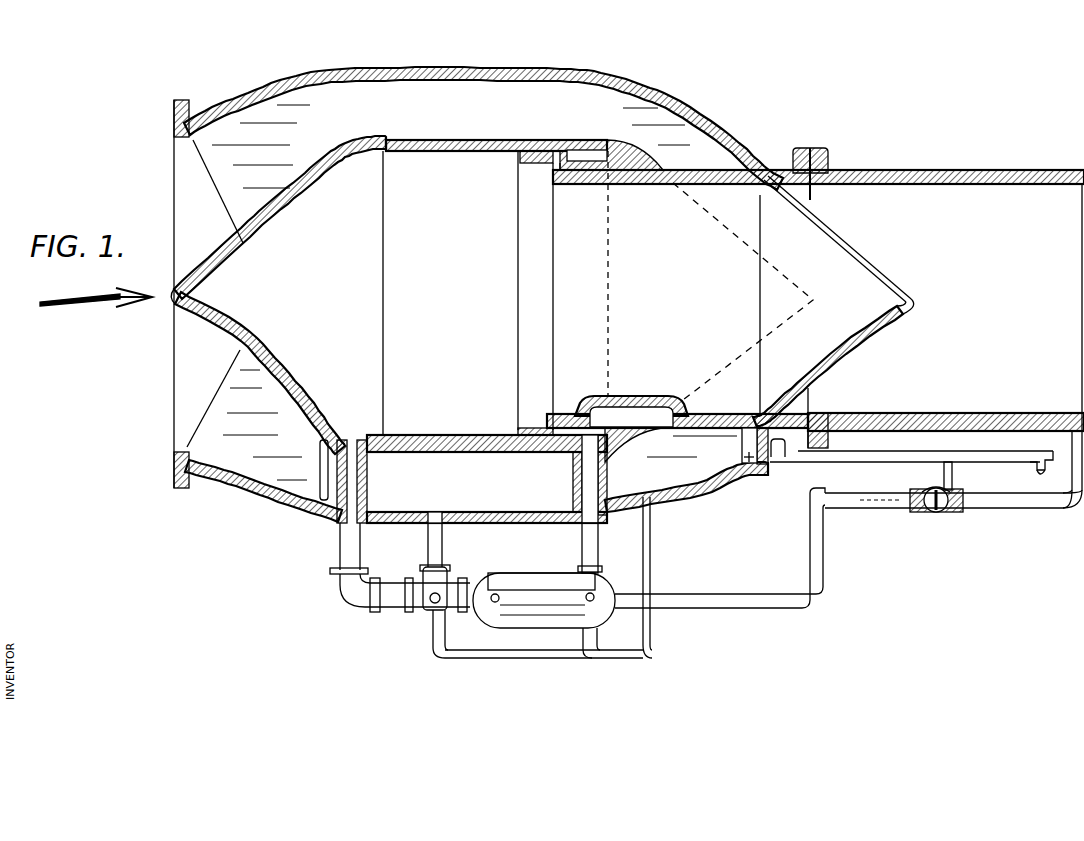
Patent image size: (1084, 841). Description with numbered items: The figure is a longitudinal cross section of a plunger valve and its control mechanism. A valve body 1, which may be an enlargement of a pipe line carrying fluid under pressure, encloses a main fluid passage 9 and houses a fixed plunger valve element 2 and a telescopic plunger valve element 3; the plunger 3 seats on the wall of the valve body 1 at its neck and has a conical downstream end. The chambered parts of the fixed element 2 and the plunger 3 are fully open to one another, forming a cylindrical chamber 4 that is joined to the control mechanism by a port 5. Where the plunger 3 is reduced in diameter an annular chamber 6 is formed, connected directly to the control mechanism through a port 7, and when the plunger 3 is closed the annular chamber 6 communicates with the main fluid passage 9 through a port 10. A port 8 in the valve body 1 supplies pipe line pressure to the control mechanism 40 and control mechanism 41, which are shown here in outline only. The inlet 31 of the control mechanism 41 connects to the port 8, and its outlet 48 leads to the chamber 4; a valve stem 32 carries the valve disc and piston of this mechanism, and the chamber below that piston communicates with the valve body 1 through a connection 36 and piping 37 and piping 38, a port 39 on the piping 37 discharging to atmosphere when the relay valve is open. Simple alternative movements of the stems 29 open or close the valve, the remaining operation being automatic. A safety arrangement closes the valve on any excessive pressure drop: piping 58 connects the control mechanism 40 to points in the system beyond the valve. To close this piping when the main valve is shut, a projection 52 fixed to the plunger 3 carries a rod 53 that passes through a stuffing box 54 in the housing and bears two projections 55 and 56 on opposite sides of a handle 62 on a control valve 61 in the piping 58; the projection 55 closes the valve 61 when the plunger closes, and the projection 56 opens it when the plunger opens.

The valve body 1 is at (503, 68).
The fixed plunger valve element 2 is at (275, 215).
The telescopic plunger valve element 3 is at (826, 232).
The cylindrical chamber 4 is at (420, 203).
The port 5 is at (352, 478).
The annular chamber 6 is at (588, 157).
The port 7 is at (603, 478).
The port 8 is at (440, 512).
The main fluid passage 9 is at (553, 103).
The port 10 is at (626, 395).
The stems 29 is at (492, 595).
The inlet 31 is at (442, 560).
The valve stem 32 is at (432, 603).
The connection 36 is at (428, 640).
The piping 37 is at (515, 660).
The piping 38 is at (648, 568).
The port 39 is at (598, 626).
The control mechanism 40 is at (532, 578).
The control mechanism 41 is at (428, 585).
The outlet 48 is at (355, 597).
The projection 52 is at (745, 465).
The rod 53 is at (877, 450).
The stuffing box 54 is at (780, 458).
The projection 55 is at (943, 467).
The projection 56 is at (1037, 472).
The piping 58 is at (825, 562).
The valve 61 is at (940, 512).
The handle 62 is at (960, 479).